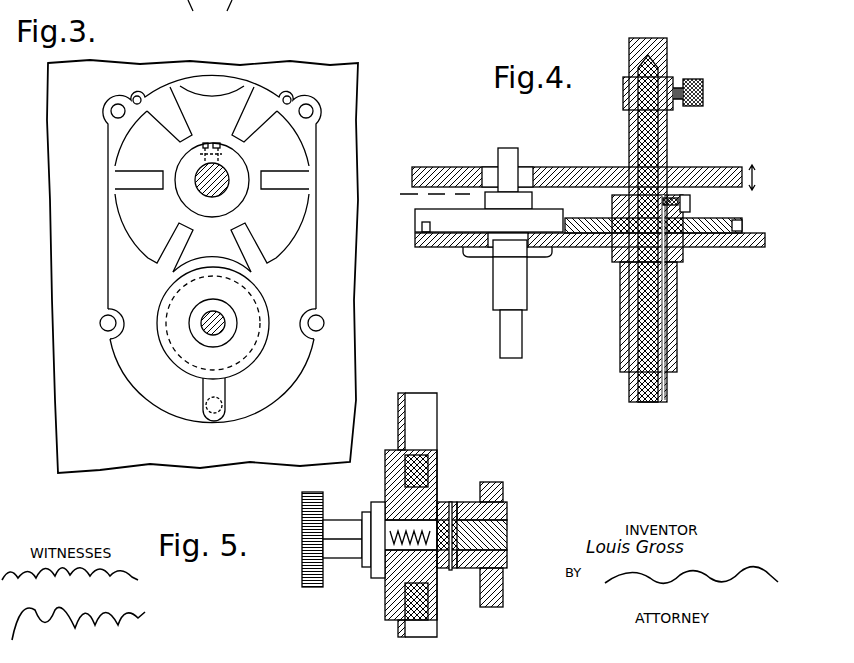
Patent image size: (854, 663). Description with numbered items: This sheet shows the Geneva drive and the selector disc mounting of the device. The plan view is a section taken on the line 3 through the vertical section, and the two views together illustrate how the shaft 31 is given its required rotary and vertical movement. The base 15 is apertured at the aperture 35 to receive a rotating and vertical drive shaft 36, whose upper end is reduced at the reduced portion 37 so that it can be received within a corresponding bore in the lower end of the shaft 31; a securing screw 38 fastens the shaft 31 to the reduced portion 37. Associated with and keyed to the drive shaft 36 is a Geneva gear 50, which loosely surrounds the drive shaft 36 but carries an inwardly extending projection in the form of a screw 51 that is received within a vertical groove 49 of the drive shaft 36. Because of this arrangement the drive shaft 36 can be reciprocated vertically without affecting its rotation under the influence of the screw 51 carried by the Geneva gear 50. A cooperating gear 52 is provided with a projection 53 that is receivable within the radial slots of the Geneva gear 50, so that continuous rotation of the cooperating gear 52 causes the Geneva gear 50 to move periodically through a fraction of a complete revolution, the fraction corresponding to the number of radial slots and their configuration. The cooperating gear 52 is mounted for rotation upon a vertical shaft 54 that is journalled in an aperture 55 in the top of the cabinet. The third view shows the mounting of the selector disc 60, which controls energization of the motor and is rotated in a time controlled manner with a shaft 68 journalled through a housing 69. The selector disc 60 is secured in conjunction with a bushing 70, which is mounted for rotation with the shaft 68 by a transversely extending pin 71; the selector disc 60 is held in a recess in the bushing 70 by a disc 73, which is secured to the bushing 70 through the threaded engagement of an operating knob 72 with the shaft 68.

In FIG. 4, the section line 3 is at (576, 183).
In FIG. 4, the base 15 is at (440, 174).
In FIG. 4, the shaft 31 is at (667, 45).
In FIG. 4, the aperture 35 is at (672, 165).
In FIG. 3, the drive shaft 36 is at (226, 189).
In FIG. 4, the drive shaft 36 is at (636, 392).
In FIG. 4, the reduced portion 37 is at (658, 130).
In FIG. 4, the securing screw 38 is at (704, 90).
In FIG. 4, the vertical groove 49 is at (665, 383).
In FIG. 3, the Geneva gear 50 is at (238, 101).
In FIG. 4, the Geneva gear 50 is at (598, 218).
In FIG. 3, the screw 51 is at (200, 150).
In FIG. 4, the screw 51 is at (690, 202).
In FIG. 3, the cooperating gear 52 is at (252, 336).
In FIG. 4, the cooperating gear 52 is at (448, 213).
In FIG. 3, the projection 53 is at (222, 405).
In FIG. 4, the projection 53 is at (420, 227).
In FIG. 3, the vertical shaft 54 is at (205, 316).
In FIG. 4, the vertical shaft 54 is at (512, 340).
In FIG. 4, the aperture 55 is at (490, 250).
In FIG. 5, the selector disc 60 is at (460, 408).
In FIG. 5, the shaft 68 is at (507, 530).
In FIG. 5, the housing 69 is at (503, 572).
In FIG. 5, the bushing 70 is at (428, 505).
In FIG. 5, the transversely extending pin 71 is at (450, 570).
In FIG. 5, the operating knob 72 is at (345, 548).
In FIG. 5, the disc 73 is at (385, 482).